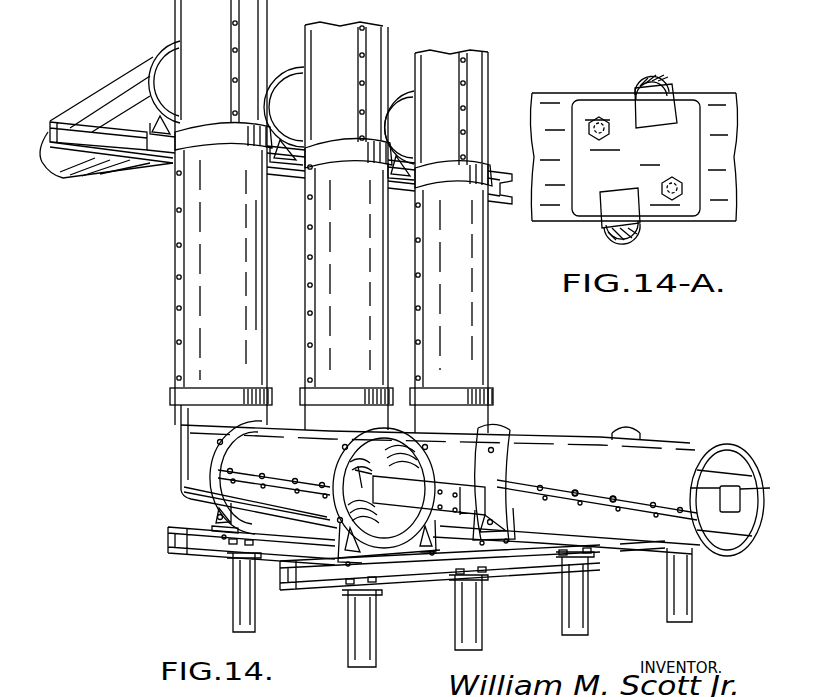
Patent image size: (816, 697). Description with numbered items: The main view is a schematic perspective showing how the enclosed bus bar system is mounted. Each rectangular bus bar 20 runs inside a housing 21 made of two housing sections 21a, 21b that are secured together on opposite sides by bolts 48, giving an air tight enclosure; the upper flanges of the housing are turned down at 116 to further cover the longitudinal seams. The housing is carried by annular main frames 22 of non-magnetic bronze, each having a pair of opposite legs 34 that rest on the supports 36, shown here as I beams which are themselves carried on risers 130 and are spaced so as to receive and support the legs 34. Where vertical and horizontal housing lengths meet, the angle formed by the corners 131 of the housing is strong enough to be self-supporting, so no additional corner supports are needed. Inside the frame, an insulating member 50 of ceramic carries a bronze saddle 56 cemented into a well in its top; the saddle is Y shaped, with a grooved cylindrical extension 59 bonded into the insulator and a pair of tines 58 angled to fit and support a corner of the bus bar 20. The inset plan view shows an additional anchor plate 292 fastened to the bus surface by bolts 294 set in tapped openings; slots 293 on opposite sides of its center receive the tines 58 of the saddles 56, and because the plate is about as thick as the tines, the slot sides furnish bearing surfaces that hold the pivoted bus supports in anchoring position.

In FIG. 14, the housing 21 is at (672, 440).
In FIG. 14, the housing section 21a is at (296, 473).
In FIG. 14, the housing section 21b is at (287, 515).
In FIG. 14, the main frame 22 is at (626, 428).
In FIG. 14, the leg 34 is at (480, 535).
In FIG. 14, the support 36 is at (316, 592).
In FIG. 14, the riser 130 is at (667, 599).
In FIG. 14, the turned-down flange portion 116 is at (642, 514).
In FIG. 14, the corner of the housing 131 is at (184, 490).
In FIG. 14, the bolt 48 is at (612, 496).
In FIG. 14, the insulating member 50 is at (418, 465).
In FIG. 14, the saddle 56 is at (390, 470).
In FIG. 14-A, the saddle 56 is at (641, 81).
In FIG. 14, the bus bar 20 is at (727, 515).
In FIG. 14-A, the bus bar 20 is at (718, 110).
In FIG. 14-A, the tine 58 is at (658, 120).
In FIG. 14-A, the cylindrical extension 59 is at (662, 82).
In FIG. 14-A, the anchor plate 292 is at (700, 212).
In FIG. 14-A, the slot 293 is at (636, 188).
In FIG. 14-A, the bolt 294 is at (597, 117).